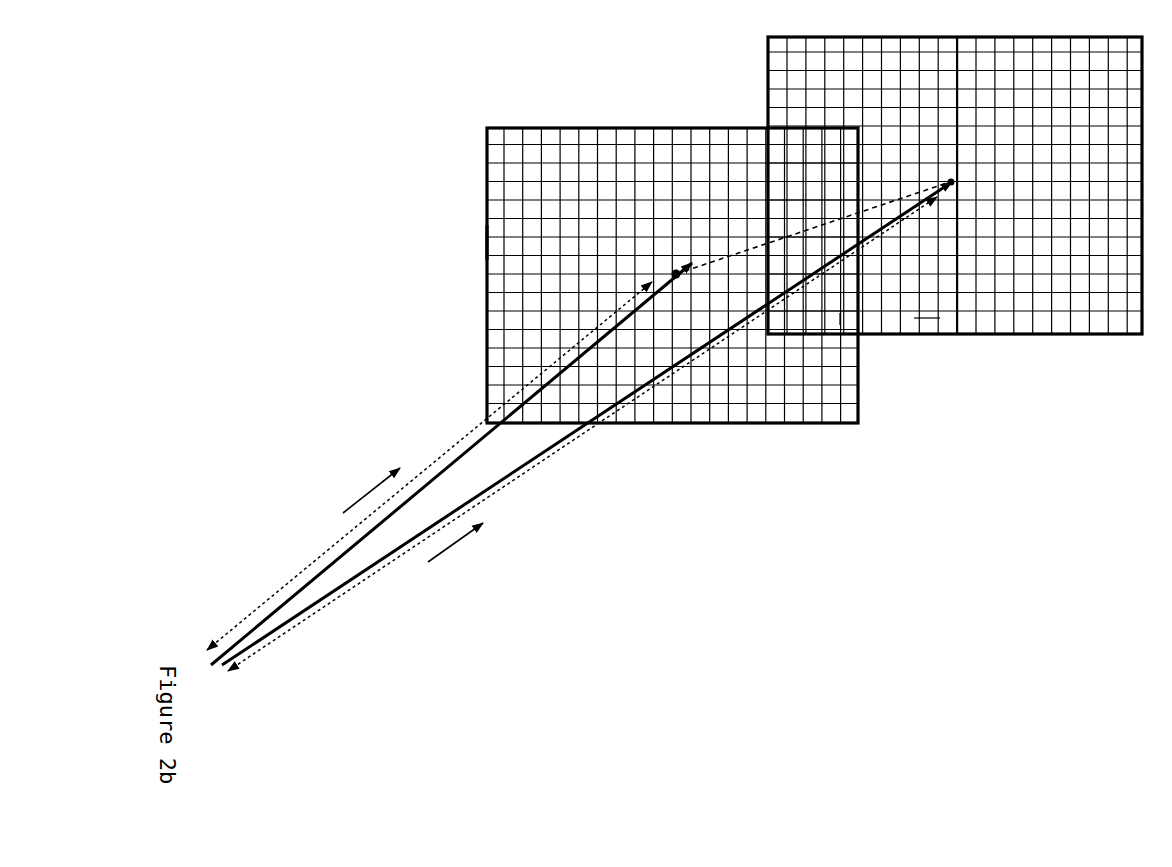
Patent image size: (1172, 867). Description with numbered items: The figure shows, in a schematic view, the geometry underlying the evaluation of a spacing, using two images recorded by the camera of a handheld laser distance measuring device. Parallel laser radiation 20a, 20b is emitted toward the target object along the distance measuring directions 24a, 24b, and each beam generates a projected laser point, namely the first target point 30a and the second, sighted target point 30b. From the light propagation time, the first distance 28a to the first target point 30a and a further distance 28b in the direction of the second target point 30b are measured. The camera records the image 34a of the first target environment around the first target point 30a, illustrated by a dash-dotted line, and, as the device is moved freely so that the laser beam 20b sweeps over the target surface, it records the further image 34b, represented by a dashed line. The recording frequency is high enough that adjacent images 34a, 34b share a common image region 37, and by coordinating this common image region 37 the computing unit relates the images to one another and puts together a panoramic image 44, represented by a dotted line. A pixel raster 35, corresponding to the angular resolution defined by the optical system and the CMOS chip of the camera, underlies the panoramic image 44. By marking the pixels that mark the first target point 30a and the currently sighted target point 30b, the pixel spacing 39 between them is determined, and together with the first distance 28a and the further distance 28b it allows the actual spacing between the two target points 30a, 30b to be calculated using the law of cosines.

The laser radiation 20a is at (467, 443).
The laser radiation 20b is at (543, 457).
The distance measuring direction 24a is at (372, 488).
The distance measuring direction 24b is at (462, 540).
The first distance 28a is at (300, 578).
The further distance 28b is at (318, 612).
The first target point 30a is at (675, 270).
The second target point 30b is at (950, 180).
The image 34a is at (486, 168).
The image 34b is at (1080, 333).
The pixel raster 35 is at (927, 318).
The common image region 37 is at (840, 314).
The pixel spacing 39 is at (790, 232).
The panoramic image 44 is at (486, 243).